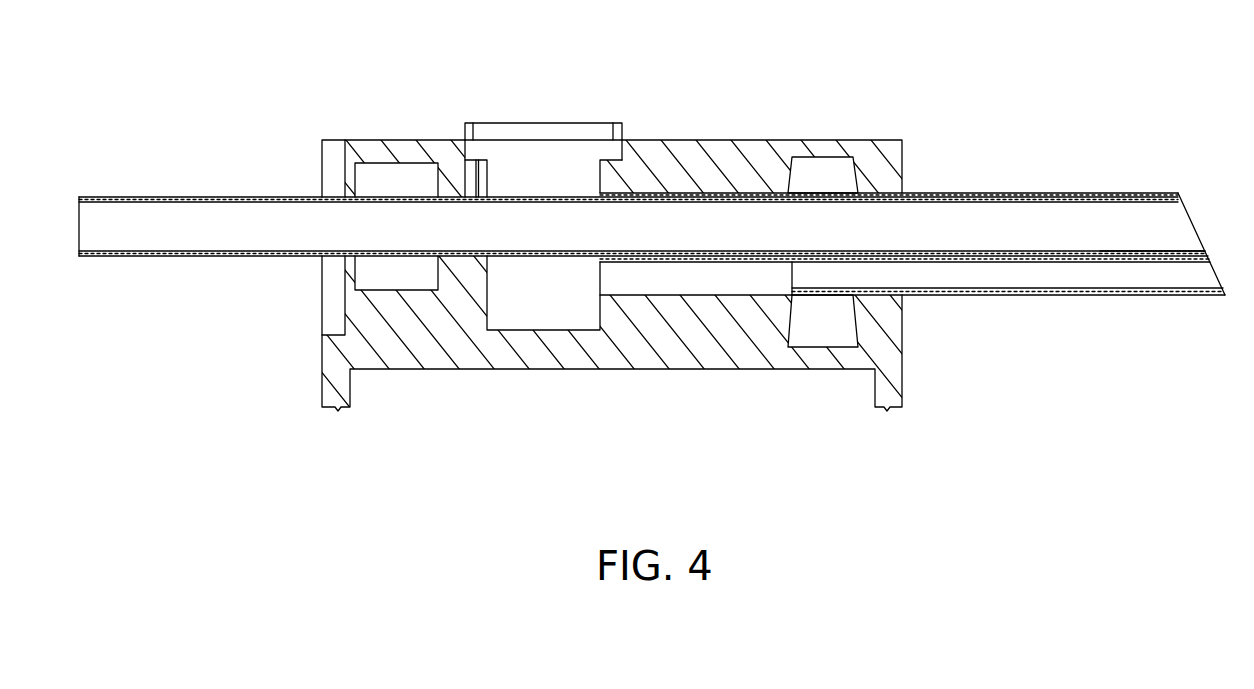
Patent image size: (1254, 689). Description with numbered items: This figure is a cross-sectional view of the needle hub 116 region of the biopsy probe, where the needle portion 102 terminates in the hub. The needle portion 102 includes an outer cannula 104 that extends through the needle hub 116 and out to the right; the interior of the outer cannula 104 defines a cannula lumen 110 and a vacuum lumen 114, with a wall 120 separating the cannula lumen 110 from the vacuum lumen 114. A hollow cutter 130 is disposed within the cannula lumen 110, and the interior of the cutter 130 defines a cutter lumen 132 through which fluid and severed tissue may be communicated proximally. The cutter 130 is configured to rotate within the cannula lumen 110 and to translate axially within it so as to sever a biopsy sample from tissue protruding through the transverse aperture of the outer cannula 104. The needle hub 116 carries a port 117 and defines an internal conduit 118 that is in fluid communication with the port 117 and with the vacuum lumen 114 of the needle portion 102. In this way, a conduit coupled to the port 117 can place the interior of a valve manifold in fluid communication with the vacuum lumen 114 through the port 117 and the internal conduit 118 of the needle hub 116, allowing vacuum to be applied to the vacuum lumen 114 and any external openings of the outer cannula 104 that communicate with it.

The needle portion 102 is at (1115, 145).
The outer cannula 104 is at (967, 195).
The cannula lumen 110 is at (1190, 190).
The vacuum lumen 114 is at (1062, 275).
The needle hub 116 is at (703, 148).
The port 117 is at (622, 125).
The internal conduit 118 is at (688, 270).
The wall 120 is at (1135, 258).
The hollow cutter 130 is at (165, 197).
The cutter lumen 132 is at (223, 223).